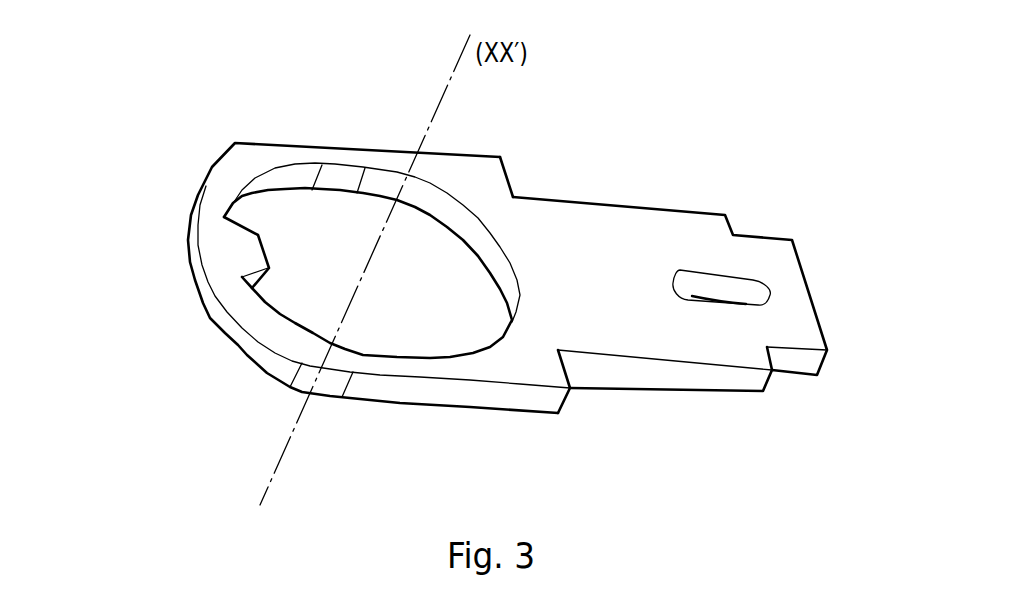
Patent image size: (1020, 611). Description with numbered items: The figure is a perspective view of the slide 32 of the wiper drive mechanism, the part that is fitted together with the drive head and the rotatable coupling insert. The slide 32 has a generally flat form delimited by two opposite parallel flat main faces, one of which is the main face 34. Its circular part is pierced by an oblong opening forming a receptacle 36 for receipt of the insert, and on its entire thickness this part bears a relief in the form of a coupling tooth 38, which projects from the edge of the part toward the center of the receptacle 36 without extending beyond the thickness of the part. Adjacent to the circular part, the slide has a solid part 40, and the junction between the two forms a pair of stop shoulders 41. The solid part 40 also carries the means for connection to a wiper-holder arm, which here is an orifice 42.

The slide 32 is at (680, 72).
The flat main face 34 is at (443, 428).
The receptacle 36 is at (310, 330).
The coupling tooth 38 is at (252, 250).
The solid part 40 is at (598, 230).
The stop shoulders 41 is at (496, 185).
The orifice 42 is at (717, 292).